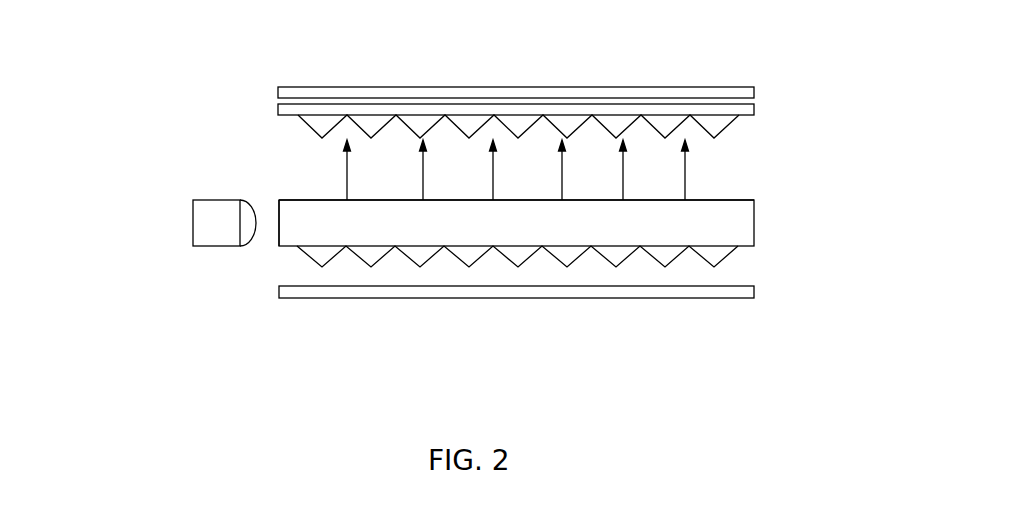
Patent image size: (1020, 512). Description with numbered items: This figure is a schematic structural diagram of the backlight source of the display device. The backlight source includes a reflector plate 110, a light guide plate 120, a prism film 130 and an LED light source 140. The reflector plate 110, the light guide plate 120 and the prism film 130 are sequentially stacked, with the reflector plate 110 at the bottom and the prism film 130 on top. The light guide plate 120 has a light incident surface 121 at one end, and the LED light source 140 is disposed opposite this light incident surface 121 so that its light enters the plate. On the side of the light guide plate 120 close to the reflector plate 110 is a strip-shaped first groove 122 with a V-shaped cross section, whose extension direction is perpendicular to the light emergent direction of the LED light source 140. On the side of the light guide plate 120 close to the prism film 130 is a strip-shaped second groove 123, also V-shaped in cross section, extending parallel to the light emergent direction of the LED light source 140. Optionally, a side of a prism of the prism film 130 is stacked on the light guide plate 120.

The reflector plate 110 is at (755, 291).
The light guide plate 120 is at (755, 223).
The light incident surface 121 is at (266, 247).
The first groove 122 is at (336, 272).
The second groove 123 is at (302, 194).
The prism film 130 is at (755, 108).
The LED light source 140 is at (193, 230).